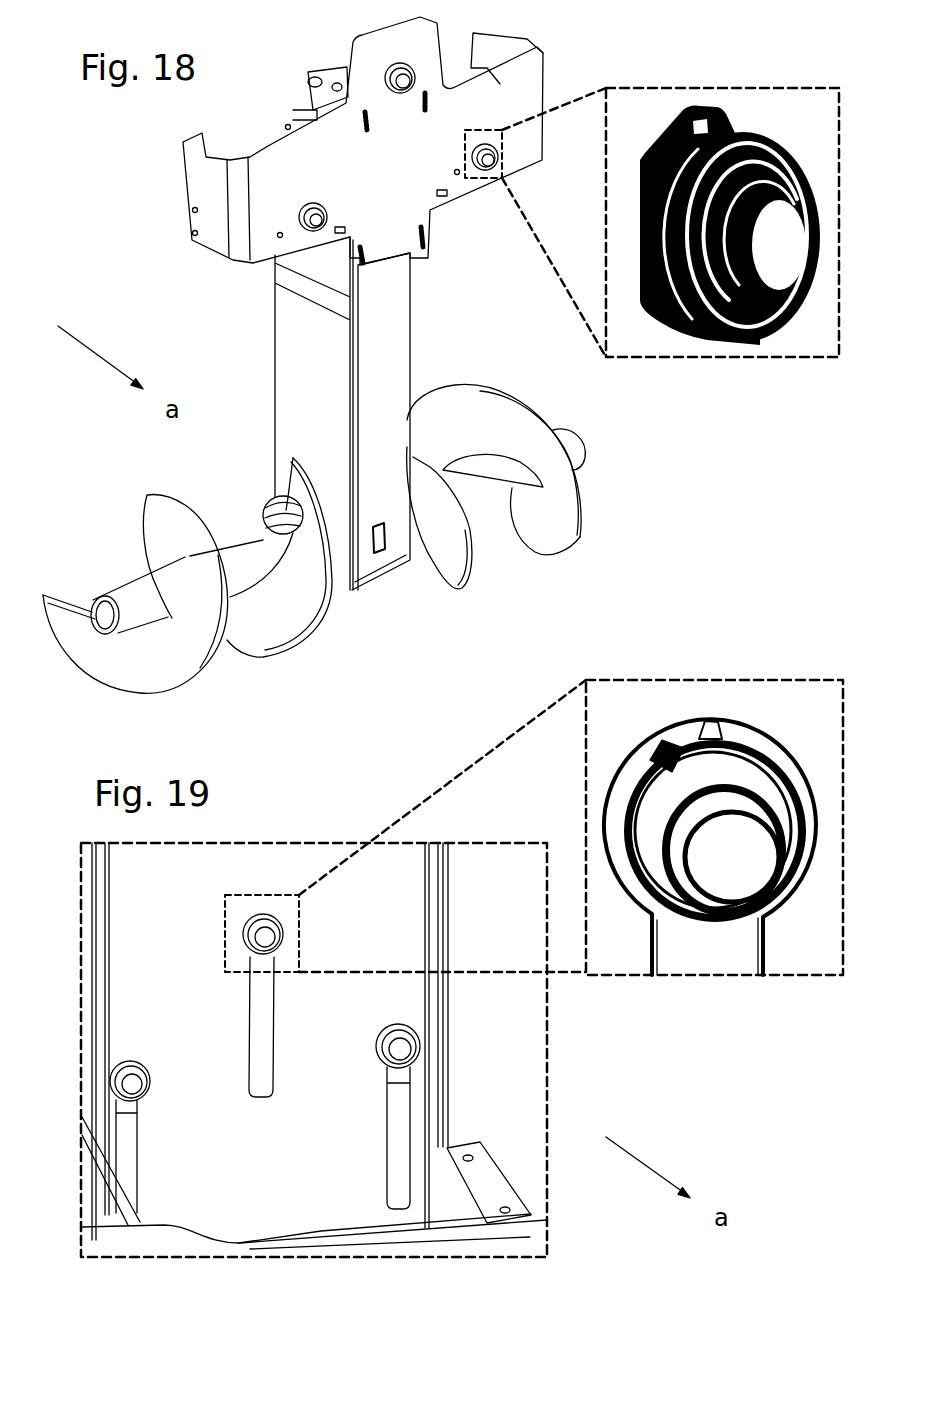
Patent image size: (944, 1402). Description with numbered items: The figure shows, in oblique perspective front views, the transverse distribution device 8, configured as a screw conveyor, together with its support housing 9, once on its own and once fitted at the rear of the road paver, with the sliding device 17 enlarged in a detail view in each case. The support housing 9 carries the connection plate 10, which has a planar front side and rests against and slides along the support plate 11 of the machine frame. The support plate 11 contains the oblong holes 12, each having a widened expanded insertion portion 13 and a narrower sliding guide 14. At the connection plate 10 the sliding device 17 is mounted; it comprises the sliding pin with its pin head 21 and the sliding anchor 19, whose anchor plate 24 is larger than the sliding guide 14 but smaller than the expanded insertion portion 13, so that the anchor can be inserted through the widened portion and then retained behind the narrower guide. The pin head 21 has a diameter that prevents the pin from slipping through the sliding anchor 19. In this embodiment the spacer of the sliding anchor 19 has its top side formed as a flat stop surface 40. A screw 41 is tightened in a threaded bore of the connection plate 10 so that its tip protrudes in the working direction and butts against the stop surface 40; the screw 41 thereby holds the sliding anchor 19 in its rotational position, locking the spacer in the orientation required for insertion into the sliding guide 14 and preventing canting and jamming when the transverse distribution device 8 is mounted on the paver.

In FIG. 18, the transverse distribution device 8 is at (170, 616).
In FIG. 18, the support housing 9 is at (382, 407).
In FIG. 18, the connection plate 10 is at (272, 215).
In FIG. 19, the support plate 11 is at (197, 1174).
In FIG. 19, the oblong hole 12 is at (187, 937).
In FIG. 19, the expanded insertion portion 13 is at (244, 927).
In FIG. 19, the sliding guide 14 is at (264, 1027).
In FIG. 18, the sliding device 17 is at (502, 194).
In FIG. 19, the sliding device 17 is at (602, 754).
In FIG. 18, the sliding anchor 19 is at (767, 167).
In FIG. 19, the sliding anchor 19 is at (745, 786).
In FIG. 18, the pin head 21 is at (770, 267).
In FIG. 19, the pin head 21 is at (740, 850).
In FIG. 18, the anchor plate 24 is at (710, 307).
In FIG. 19, the anchor plate 24 is at (677, 896).
In FIG. 18, the stop surface 40 is at (663, 150).
In FIG. 19, the stop surface 40 is at (656, 757).
In FIG. 18, the screw 41 is at (700, 110).
In FIG. 19, the screw 41 is at (704, 739).